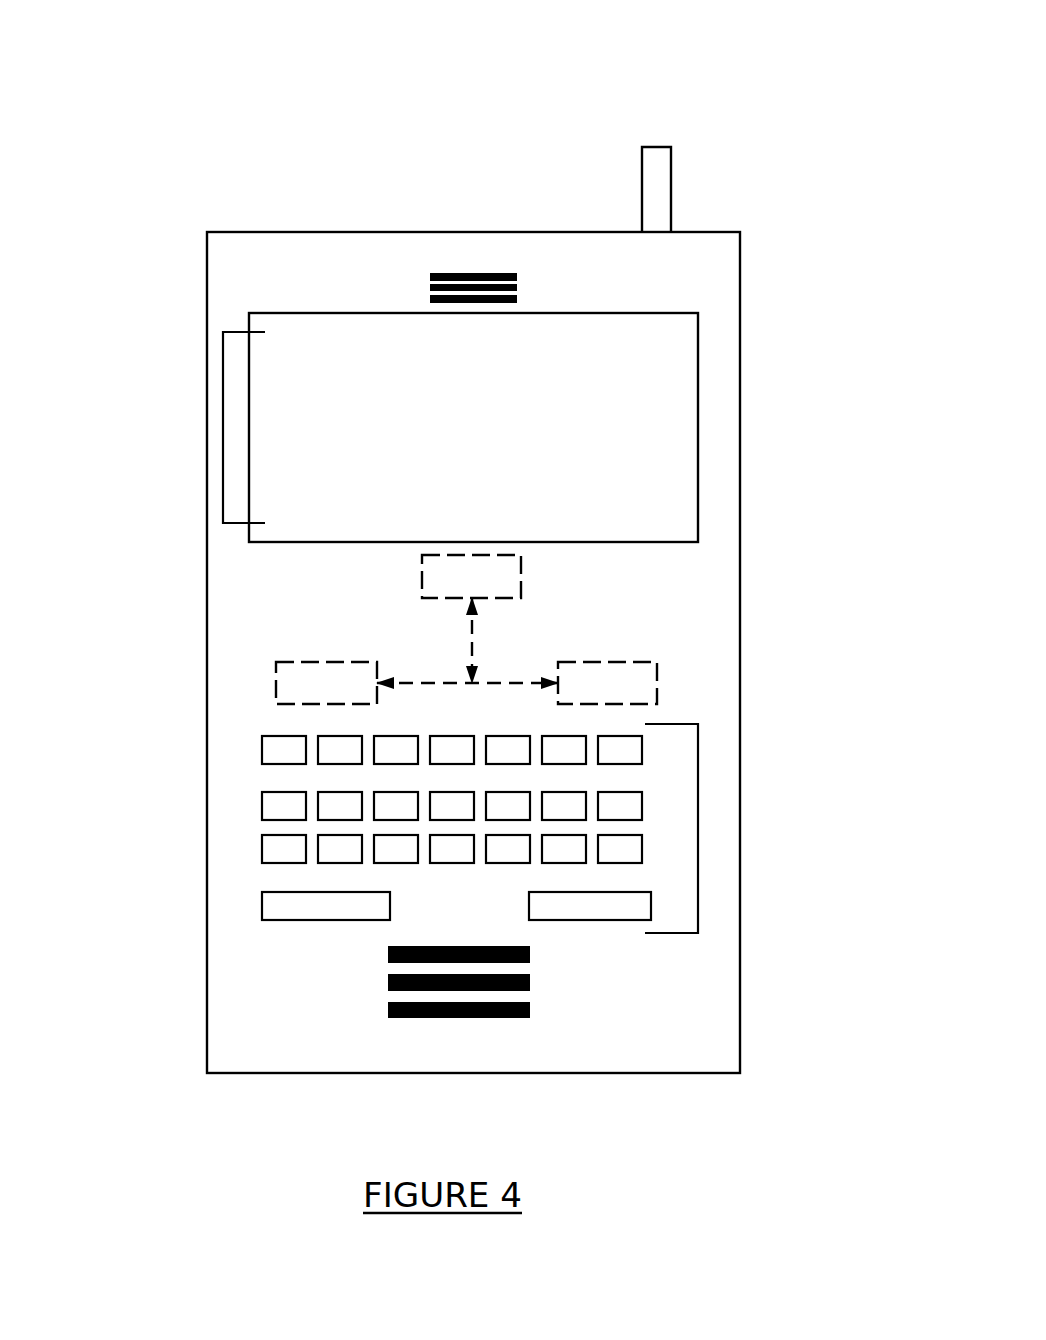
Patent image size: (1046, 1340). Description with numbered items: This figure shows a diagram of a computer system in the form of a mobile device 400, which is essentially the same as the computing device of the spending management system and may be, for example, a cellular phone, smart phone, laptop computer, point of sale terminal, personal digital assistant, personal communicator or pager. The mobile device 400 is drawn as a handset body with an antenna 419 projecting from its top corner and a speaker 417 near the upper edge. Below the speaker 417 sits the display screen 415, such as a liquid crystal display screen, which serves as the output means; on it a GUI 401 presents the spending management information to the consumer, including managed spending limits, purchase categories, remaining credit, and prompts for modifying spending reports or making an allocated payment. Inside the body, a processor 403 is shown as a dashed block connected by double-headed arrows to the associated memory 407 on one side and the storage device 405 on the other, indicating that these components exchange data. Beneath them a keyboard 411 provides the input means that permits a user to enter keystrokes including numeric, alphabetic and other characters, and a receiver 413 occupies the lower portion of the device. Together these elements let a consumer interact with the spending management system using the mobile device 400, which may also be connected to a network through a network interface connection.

The mobile device 400 is at (540, 93).
The GUI 401 is at (222, 433).
The processor 403 is at (422, 577).
The storage device 405 is at (276, 683).
The memory 407 is at (657, 682).
The keyboard 411 is at (699, 820).
The receiver 413 is at (458, 1018).
The display screen 415 is at (662, 338).
The speaker 417 is at (470, 272).
The antenna 419 is at (657, 188).